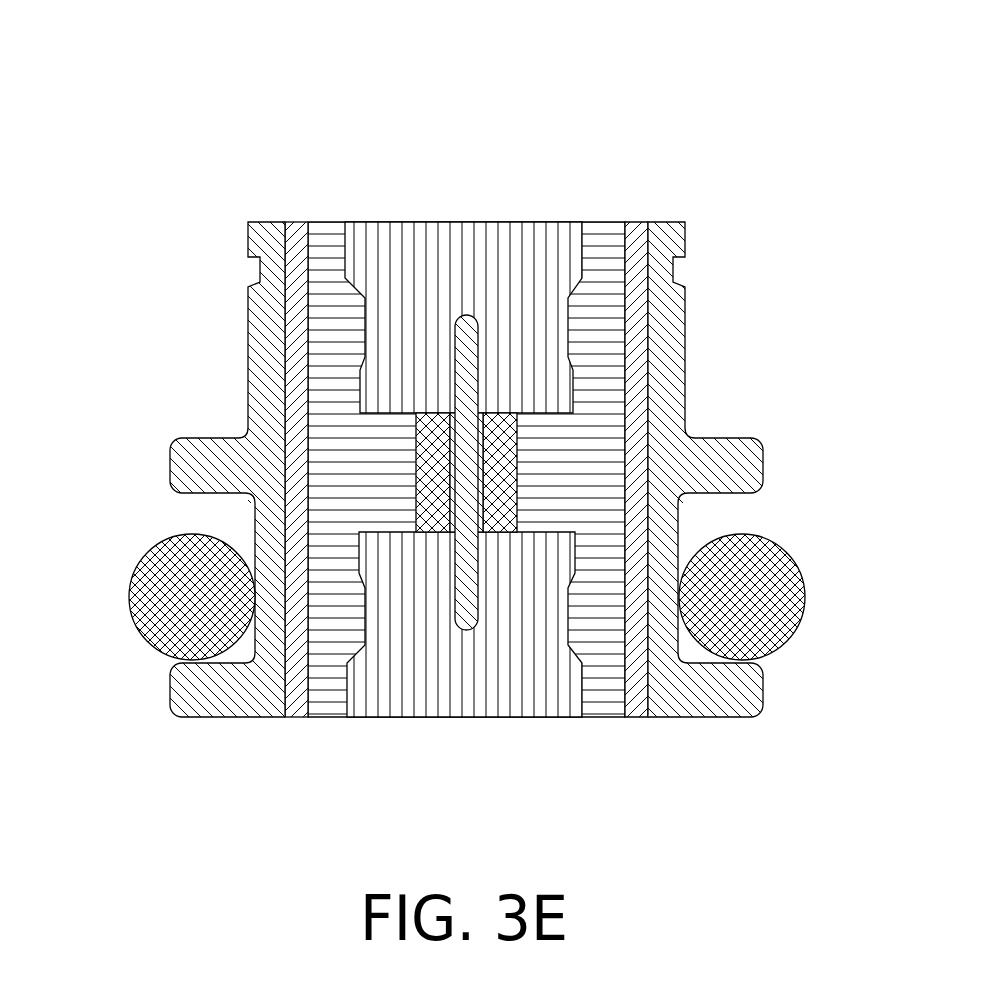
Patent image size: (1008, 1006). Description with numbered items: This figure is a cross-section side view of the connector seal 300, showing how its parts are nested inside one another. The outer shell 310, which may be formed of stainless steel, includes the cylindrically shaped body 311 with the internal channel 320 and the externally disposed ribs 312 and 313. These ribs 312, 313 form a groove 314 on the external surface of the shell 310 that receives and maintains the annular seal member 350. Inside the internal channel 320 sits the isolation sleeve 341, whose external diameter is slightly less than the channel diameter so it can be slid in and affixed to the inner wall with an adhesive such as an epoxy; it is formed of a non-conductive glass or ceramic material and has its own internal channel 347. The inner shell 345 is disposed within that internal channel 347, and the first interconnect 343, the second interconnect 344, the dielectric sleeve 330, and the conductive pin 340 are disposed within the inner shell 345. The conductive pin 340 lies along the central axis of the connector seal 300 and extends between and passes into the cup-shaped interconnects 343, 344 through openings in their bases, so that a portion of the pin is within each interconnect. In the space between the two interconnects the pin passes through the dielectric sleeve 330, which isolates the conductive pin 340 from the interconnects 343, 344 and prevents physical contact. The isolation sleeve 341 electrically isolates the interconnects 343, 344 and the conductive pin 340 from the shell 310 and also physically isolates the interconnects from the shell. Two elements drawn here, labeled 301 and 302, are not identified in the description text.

The connector seal 300 is at (463, 447).
The housing 301 is at (205, 728).
The inner liner 302 is at (509, 427).
The shell 310 is at (719, 469).
The cylindrically shaped body 311 is at (203, 469).
The externally disposed rib 312 is at (770, 680).
The externally disposed rib 313 is at (469, 443).
The groove 314 is at (373, 567).
The internal channel 320 is at (514, 264).
The dielectric sleeve 330 is at (287, 418).
The conductive pin 340 is at (659, 425).
The isolation sleeve 341 is at (520, 628).
The first interconnect 343 is at (386, 713).
The second interconnect 344 is at (401, 271).
The inner shell 345 is at (643, 443).
The internal channel 347 is at (690, 672).
The annular seal member 350 is at (463, 589).